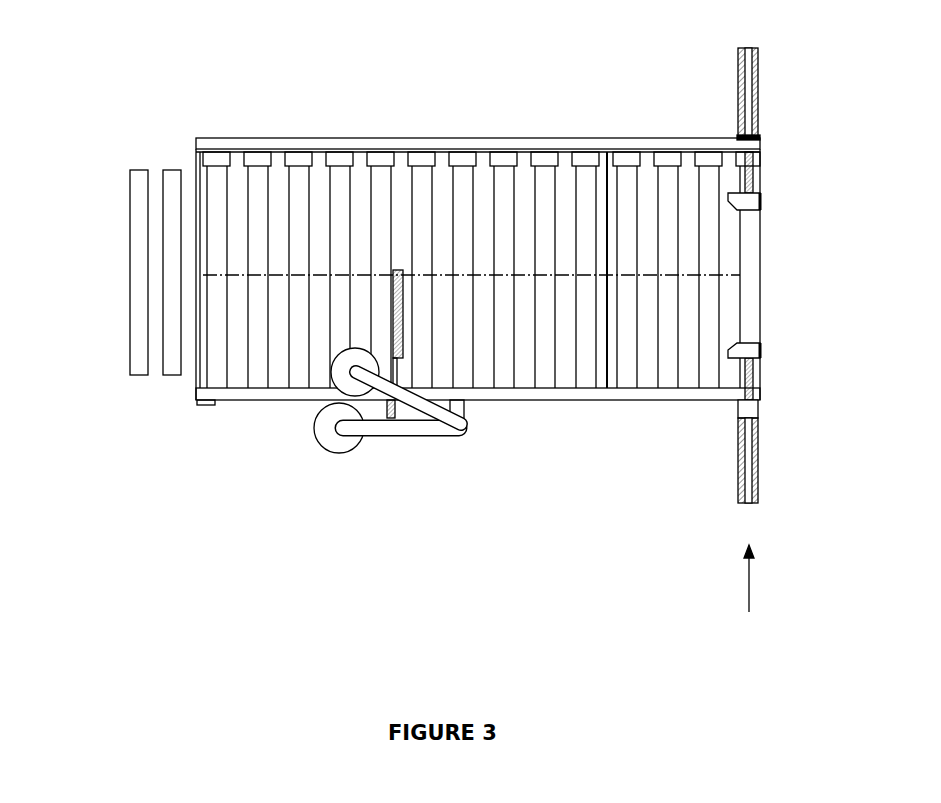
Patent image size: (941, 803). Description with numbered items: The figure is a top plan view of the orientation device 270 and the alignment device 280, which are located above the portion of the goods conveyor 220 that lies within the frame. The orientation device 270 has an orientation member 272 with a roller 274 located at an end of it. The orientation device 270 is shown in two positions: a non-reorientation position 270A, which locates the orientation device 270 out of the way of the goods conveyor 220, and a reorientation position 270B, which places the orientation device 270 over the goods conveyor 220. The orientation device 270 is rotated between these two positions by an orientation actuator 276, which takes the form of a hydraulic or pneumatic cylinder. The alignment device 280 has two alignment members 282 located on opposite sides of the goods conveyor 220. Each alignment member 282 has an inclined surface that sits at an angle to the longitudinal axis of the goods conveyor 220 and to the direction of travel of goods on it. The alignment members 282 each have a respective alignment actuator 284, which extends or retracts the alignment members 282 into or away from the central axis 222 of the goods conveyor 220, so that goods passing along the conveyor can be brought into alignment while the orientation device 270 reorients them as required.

The goods conveyor 220 is at (130, 232).
The central axis 222 is at (547, 275).
The orientation actuator 276 is at (403, 302).
The orientation device 270 is at (326, 482).
The non-reorientation position 270A is at (316, 436).
The reorientation position 270B is at (335, 359).
The orientation member 272 is at (337, 453).
The roller 274 is at (383, 437).
The alignment device 280 is at (748, 594).
The alignment member 282 is at (751, 205).
The alignment actuator 284 is at (749, 106).